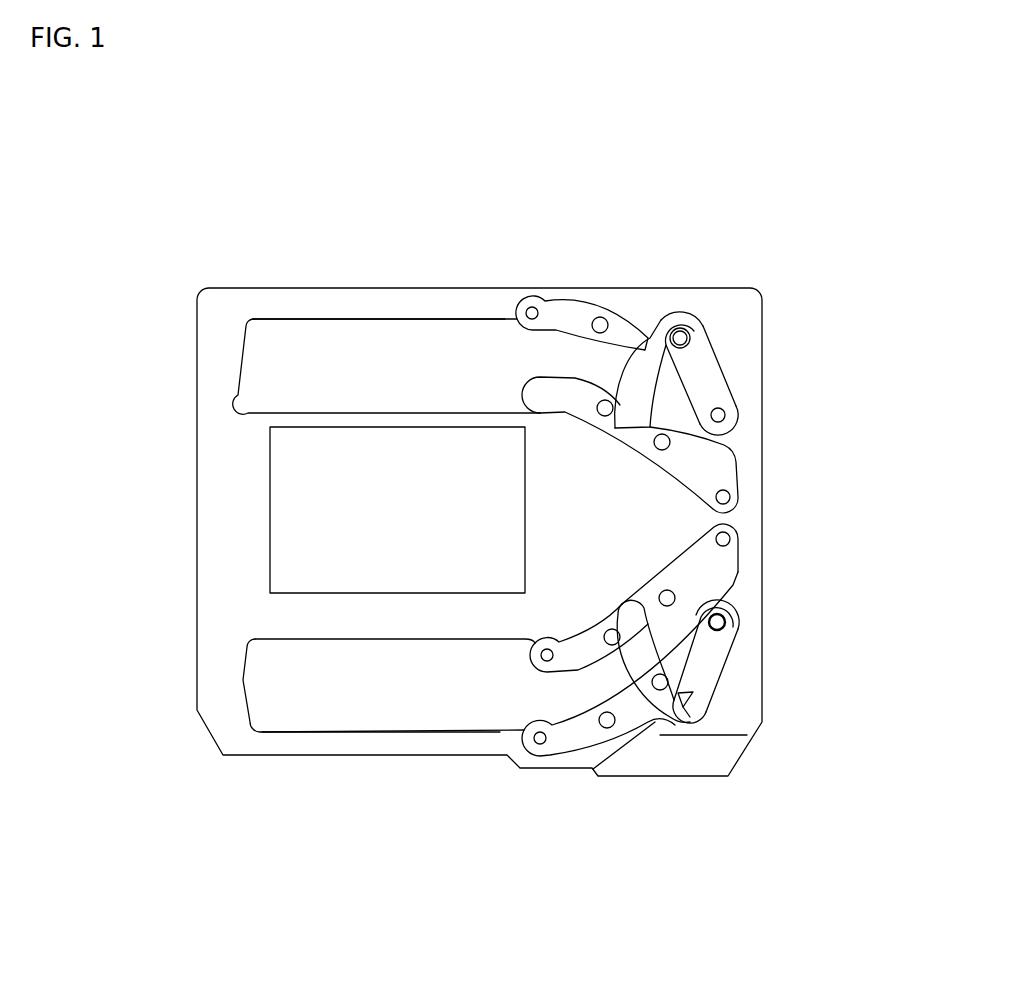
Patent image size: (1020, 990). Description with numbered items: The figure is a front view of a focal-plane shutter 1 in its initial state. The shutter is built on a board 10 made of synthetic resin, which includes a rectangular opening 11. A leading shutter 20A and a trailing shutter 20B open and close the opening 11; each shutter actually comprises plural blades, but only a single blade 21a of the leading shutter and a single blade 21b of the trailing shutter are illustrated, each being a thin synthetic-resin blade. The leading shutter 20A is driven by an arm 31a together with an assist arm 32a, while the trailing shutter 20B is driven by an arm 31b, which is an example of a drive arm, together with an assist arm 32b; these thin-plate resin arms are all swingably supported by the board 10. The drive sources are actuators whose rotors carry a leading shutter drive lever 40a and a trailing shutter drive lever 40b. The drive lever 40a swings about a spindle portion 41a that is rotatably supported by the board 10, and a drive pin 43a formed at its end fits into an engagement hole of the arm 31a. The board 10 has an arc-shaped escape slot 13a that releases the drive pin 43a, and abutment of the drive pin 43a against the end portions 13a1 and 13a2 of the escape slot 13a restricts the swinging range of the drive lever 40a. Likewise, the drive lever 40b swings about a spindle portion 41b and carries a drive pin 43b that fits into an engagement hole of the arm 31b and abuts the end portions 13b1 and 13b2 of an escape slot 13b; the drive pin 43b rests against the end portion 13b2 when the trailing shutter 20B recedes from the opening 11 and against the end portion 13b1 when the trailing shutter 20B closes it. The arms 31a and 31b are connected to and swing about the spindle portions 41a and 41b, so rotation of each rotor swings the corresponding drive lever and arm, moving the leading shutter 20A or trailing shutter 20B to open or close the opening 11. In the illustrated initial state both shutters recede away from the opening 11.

The focal-plane shutter 1 is at (731, 240).
The board 10 is at (768, 297).
The opening 11 is at (385, 430).
The leading shutter 20A is at (396, 314).
The trailing shutter 20B is at (360, 745).
The blade 21a is at (325, 338).
The blade 21b is at (437, 703).
The arm 31a is at (563, 310).
The arm 31b is at (566, 742).
The assist arm 32a is at (722, 465).
The assist arm 32b is at (722, 553).
The escape slot 13a is at (647, 337).
The escape slot 13b is at (643, 690).
The end portion 13a1 is at (702, 340).
The end portion 13a2 is at (733, 432).
The end portion 13b1 is at (717, 586).
The end portion 13b2 is at (688, 730).
The leading shutter drive lever 40a is at (714, 385).
The trailing shutter drive lever 40b is at (712, 640).
The spindle portion 41a is at (726, 413).
The spindle portion 41b is at (727, 621).
The drive pin 43a is at (678, 330).
The drive pin 43b is at (690, 688).